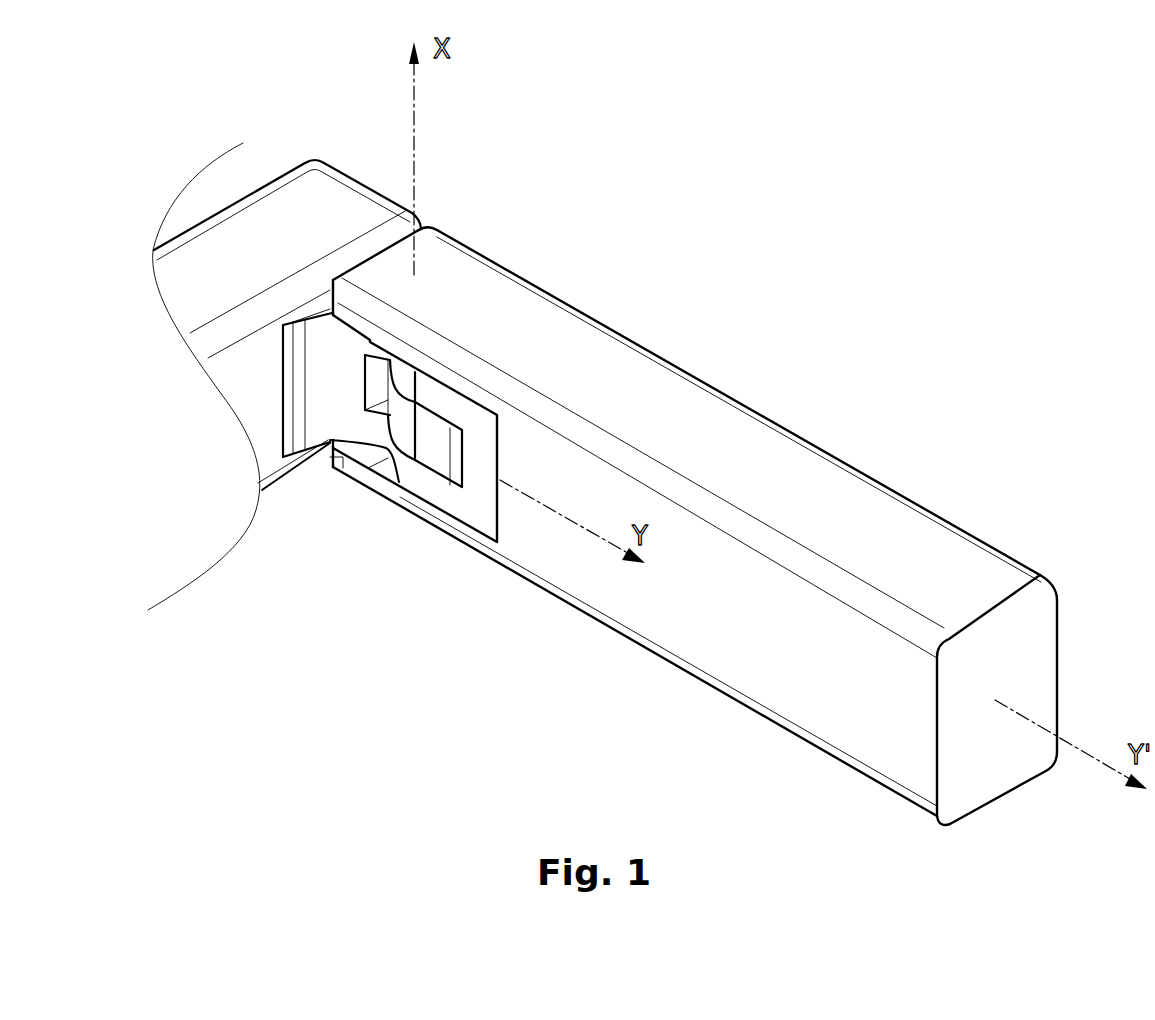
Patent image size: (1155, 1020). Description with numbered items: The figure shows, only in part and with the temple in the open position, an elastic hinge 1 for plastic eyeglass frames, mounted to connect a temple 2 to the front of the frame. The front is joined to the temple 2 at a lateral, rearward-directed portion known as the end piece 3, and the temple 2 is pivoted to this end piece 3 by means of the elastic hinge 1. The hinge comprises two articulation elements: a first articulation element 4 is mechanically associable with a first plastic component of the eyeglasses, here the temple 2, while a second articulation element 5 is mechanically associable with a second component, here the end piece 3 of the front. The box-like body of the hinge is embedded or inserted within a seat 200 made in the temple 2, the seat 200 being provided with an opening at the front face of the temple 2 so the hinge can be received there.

The elastic hinge 1 is at (428, 426).
The temple 2 is at (675, 407).
The end piece 3 is at (242, 213).
The first articulation element 4 is at (452, 500).
The second articulation element 5 is at (335, 408).
The seat 200 is at (487, 520).